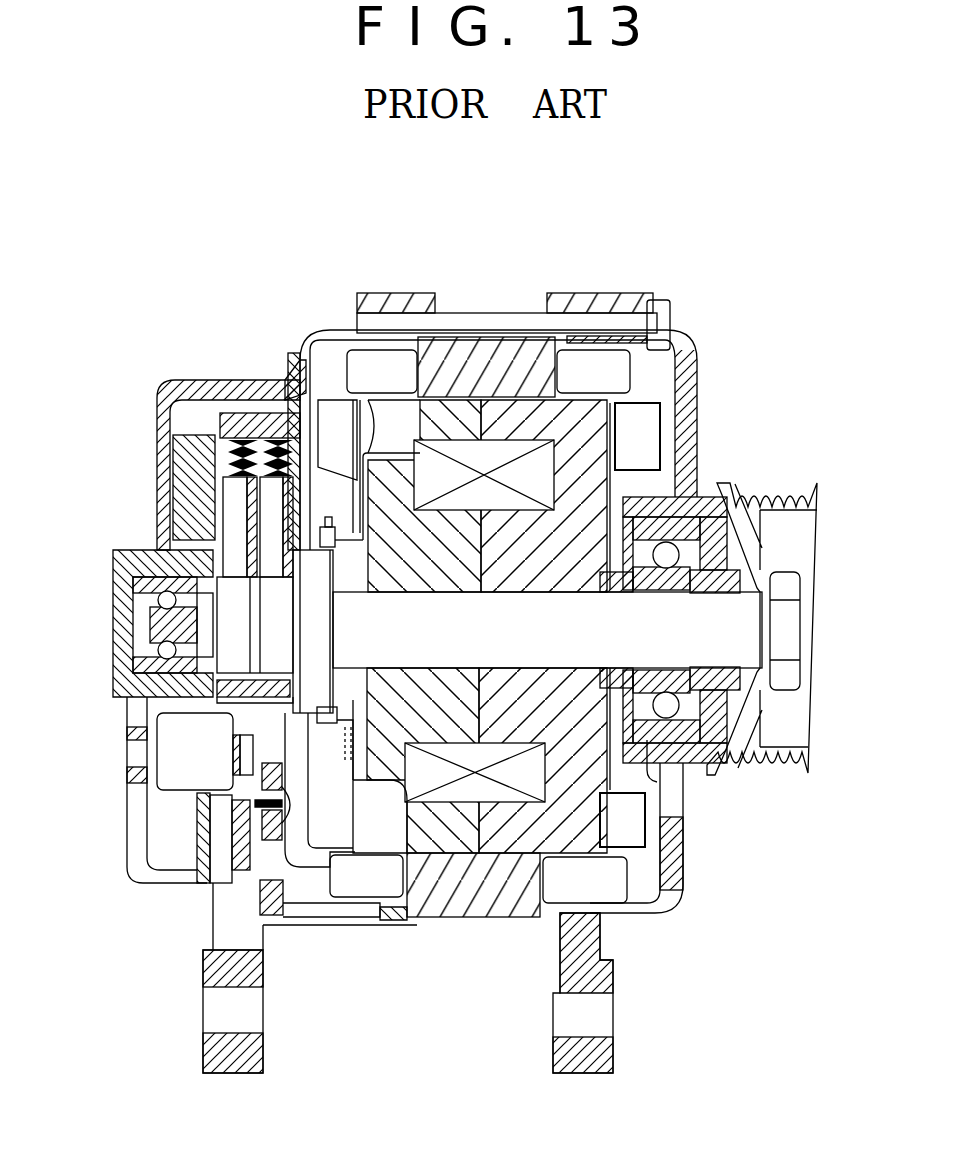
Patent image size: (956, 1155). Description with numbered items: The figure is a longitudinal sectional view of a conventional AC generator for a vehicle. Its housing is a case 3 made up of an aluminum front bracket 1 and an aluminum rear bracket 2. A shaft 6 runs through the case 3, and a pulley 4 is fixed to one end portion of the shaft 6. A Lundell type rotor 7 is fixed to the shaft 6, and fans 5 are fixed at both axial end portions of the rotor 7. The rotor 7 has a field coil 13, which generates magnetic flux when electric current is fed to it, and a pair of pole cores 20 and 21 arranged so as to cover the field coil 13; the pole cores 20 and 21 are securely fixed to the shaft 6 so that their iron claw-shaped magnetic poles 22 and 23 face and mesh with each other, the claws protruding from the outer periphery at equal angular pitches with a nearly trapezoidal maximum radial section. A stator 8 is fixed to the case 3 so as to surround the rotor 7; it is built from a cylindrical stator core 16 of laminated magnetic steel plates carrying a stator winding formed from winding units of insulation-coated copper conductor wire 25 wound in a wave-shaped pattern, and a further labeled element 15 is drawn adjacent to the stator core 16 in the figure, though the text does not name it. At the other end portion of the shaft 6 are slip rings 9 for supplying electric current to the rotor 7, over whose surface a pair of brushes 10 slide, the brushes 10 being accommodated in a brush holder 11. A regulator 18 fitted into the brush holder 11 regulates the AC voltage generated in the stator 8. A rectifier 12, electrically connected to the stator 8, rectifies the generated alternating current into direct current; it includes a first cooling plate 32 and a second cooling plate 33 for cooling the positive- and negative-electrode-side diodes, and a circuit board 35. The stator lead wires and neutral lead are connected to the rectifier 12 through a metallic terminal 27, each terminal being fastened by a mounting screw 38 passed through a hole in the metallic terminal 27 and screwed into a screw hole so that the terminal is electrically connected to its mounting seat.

The front bracket 1 is at (687, 850).
The rear bracket 2 is at (130, 877).
The case 3 is at (676, 908).
The pulley 4 is at (787, 488).
The fans 5 is at (692, 418).
The shaft 6 is at (745, 622).
The rotor 7 is at (487, 638).
The stator 8 is at (480, 544).
The slip rings 9 is at (240, 633).
The brushes 10 is at (278, 527).
The brush holder 11 is at (250, 420).
The rectifier 12 is at (183, 787).
The field coil 13 is at (477, 785).
The stator core 15 is at (478, 350).
The stator core 16 is at (563, 350).
The regulator 18 is at (210, 437).
The pole core 20 is at (533, 838).
The pole core 21 is at (388, 840).
The claw-shaped magnetic pole 22 is at (582, 403).
The claw-shaped magnetic pole 23 is at (393, 410).
The copper conductor wire 25 is at (350, 800).
The metallic terminal 27 is at (308, 822).
The first cooling plate 32 is at (230, 747).
The second cooling plate 33 is at (225, 840).
The circuit board 35 is at (275, 870).
The mounting screw 38 is at (287, 808).